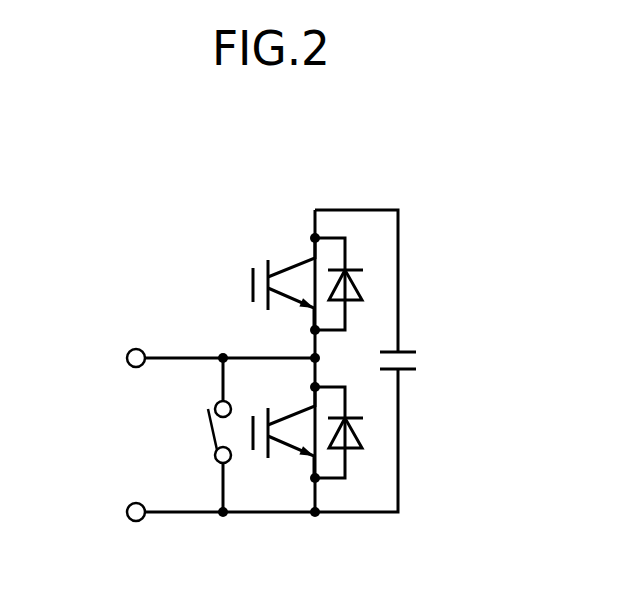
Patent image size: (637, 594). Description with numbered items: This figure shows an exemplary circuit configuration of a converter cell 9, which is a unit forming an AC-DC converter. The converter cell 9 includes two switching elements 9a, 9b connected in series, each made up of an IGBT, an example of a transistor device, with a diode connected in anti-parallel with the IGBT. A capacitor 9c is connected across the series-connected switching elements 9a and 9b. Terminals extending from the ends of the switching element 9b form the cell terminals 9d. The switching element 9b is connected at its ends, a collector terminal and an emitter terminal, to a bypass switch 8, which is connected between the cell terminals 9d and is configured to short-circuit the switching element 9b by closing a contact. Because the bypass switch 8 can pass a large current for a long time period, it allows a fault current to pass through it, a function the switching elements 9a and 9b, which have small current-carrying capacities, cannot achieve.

The converter cell 9 is at (462, 163).
The switching element 9a is at (280, 254).
The switching element 9b is at (280, 466).
The capacitor 9c is at (407, 351).
The cell terminals 9d is at (127, 358).
The bypass switch 8 is at (207, 426).